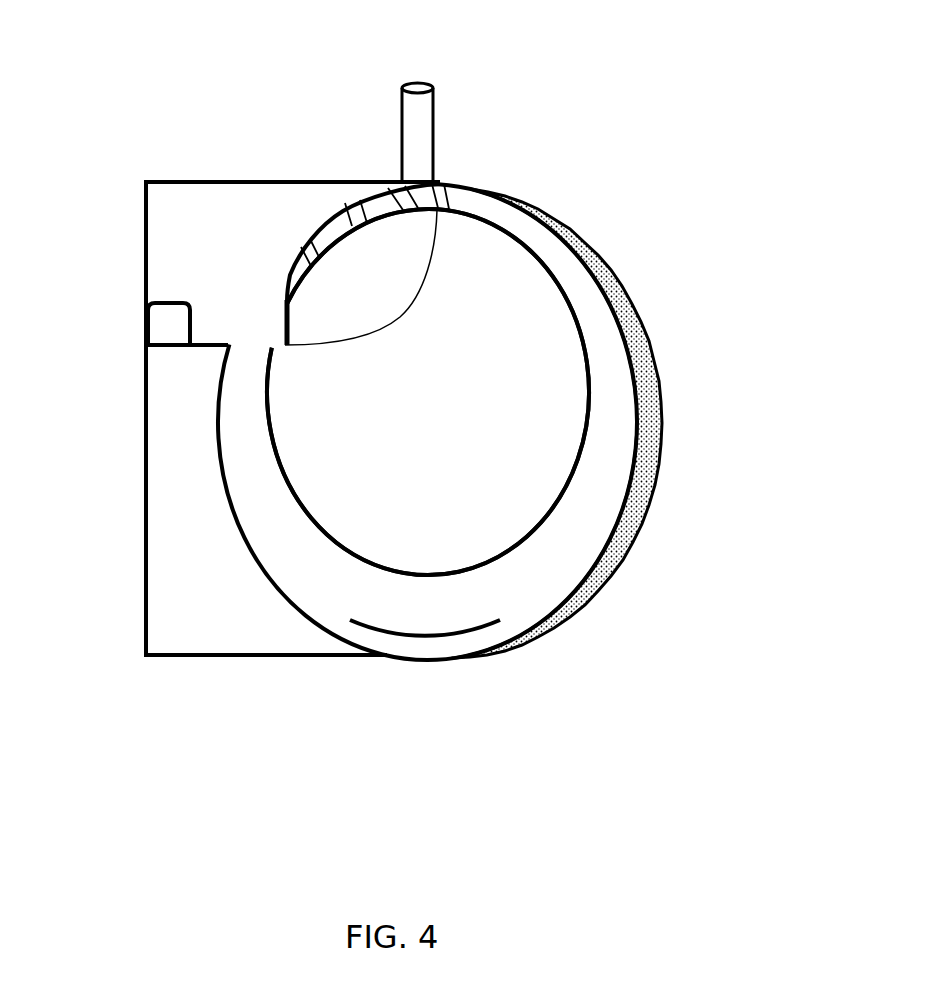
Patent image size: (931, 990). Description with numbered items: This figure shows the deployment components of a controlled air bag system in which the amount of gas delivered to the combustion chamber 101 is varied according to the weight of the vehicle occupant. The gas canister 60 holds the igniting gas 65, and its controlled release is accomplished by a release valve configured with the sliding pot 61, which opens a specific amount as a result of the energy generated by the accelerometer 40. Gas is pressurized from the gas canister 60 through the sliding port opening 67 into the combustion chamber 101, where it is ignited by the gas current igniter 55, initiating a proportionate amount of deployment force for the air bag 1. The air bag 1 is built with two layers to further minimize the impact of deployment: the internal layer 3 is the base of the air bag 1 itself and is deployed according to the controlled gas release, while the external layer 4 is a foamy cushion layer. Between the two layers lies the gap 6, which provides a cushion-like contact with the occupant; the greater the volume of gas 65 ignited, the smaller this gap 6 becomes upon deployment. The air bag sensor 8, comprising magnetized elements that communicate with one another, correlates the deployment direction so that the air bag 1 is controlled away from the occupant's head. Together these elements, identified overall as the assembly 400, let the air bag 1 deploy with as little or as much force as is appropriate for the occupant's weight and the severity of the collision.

The air bag 1 is at (433, 662).
The internal layer 3 is at (358, 560).
The external layer 4 is at (272, 578).
The gap 6 is at (603, 330).
The air bag sensor 8 is at (662, 397).
The accelerometer 40 is at (438, 182).
The gas current igniter 55 is at (413, 82).
The gas canister 60 is at (144, 450).
The sliding pot 61 is at (371, 184).
The igniting gas 65 is at (144, 325).
The sliding port opening 67 is at (282, 360).
The combustion chamber 101 is at (478, 355).
The assembly 400 is at (645, 696).